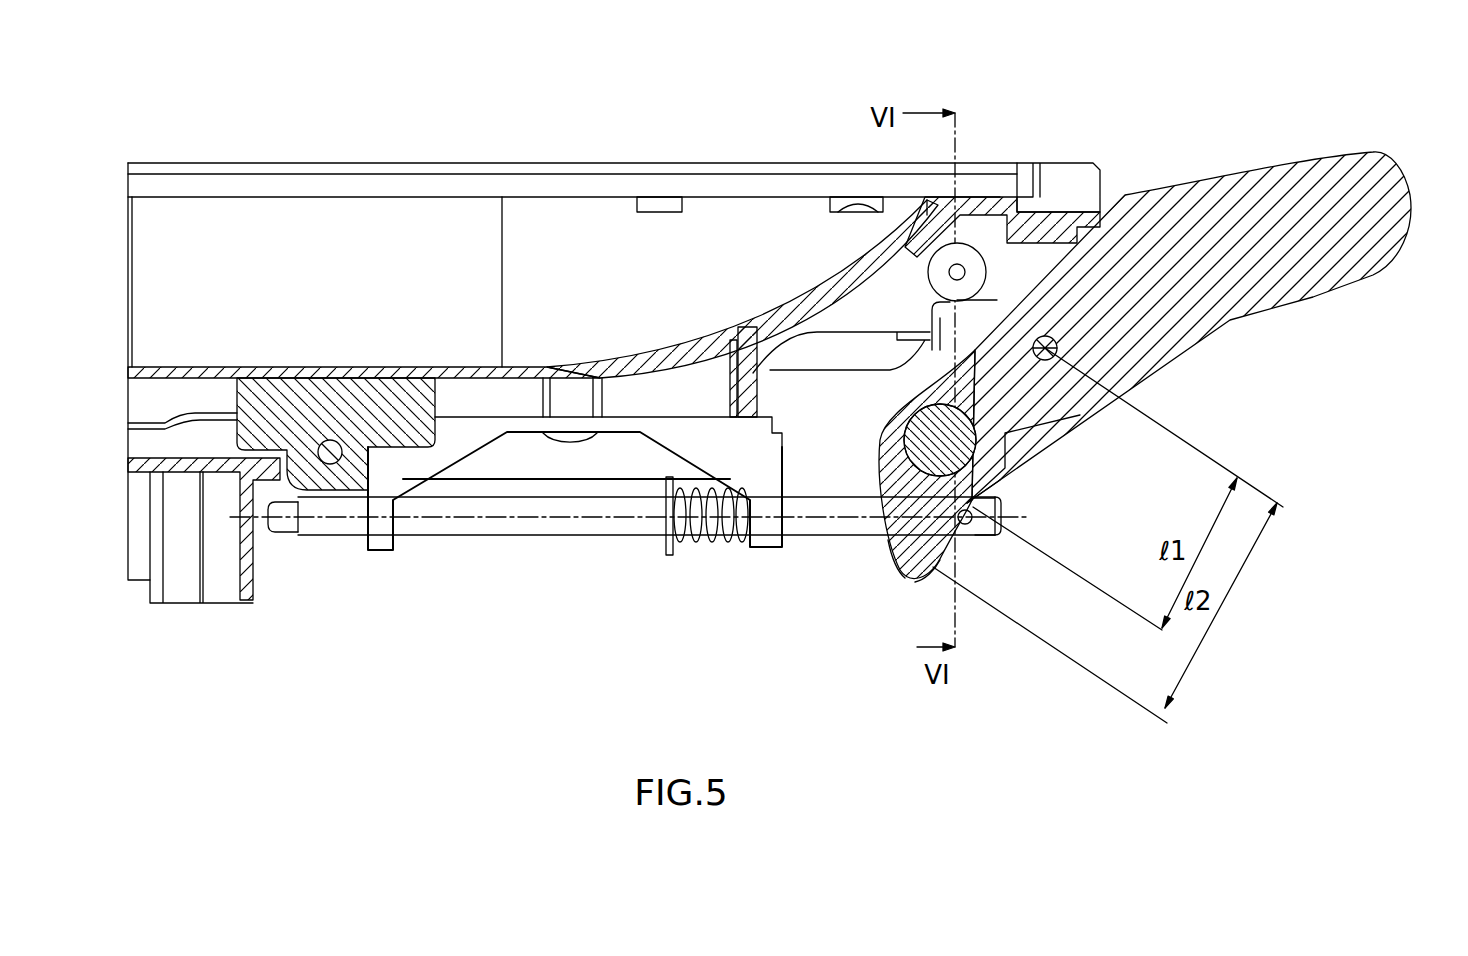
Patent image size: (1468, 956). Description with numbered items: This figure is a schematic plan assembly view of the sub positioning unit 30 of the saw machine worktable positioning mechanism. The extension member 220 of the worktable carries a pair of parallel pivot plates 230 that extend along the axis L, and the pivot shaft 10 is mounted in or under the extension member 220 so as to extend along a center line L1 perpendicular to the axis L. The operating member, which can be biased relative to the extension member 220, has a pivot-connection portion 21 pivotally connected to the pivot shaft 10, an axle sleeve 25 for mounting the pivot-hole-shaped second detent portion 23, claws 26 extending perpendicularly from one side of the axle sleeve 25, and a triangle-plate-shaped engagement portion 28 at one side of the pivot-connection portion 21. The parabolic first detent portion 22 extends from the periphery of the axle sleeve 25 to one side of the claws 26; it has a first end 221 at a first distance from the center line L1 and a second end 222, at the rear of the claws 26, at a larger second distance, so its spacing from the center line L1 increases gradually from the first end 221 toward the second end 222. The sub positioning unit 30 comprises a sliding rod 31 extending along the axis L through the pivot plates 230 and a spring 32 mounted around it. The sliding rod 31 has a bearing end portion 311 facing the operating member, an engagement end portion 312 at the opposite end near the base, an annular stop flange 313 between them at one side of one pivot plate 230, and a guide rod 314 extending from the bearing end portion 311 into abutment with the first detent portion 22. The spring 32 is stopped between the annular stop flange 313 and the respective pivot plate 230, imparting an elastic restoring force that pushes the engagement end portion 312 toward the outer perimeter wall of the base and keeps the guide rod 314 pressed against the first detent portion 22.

The extension member 220 is at (565, 188).
The pivot plates 230 is at (790, 460).
The engagement portion 28 is at (938, 322).
The pivot shaft 10 is at (1189, 331).
The pivot-connection portion 21 is at (1189, 331).
The first end 221 is at (1007, 490).
The first detent portion 22 is at (975, 505).
The second detent portion 23 is at (869, 544).
The axle sleeve 25 is at (887, 423).
The claws 26 is at (903, 572).
The second end 222 is at (933, 568).
The sub positioning unit 30 is at (668, 564).
The sliding rod 31 is at (507, 537).
The engagement end portion 312 is at (270, 535).
The bearing end portion 311 is at (1002, 533).
The annular stop flange 313 is at (667, 550).
The guide rod 314 is at (968, 525).
The spring 32 is at (705, 545).
The axis L is at (639, 520).
The center line L1 is at (1070, 348).